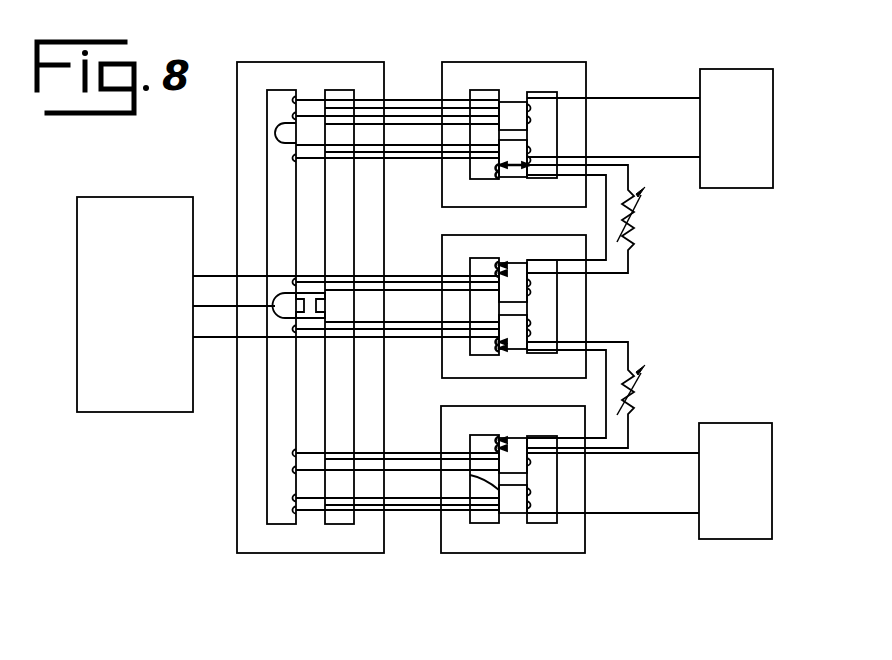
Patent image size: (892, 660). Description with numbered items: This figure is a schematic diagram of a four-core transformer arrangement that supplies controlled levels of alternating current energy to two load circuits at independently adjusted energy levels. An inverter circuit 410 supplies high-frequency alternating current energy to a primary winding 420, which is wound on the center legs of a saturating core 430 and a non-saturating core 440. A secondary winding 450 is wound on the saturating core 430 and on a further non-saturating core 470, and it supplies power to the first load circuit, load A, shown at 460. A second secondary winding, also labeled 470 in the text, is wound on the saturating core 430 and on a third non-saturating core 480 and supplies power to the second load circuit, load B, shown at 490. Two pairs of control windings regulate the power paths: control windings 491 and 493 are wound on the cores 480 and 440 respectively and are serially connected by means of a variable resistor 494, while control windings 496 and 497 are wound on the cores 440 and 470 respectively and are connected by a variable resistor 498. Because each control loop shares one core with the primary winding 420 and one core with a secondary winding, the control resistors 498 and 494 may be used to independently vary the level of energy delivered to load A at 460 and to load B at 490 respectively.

The inverter circuit 410 is at (140, 412).
The primary winding 420 is at (395, 276).
The saturating core 430 is at (300, 62).
The non-saturating core 440 is at (586, 305).
The secondary winding 450 is at (400, 95).
The first load circuit (load A) 460 is at (735, 68).
The non-saturating core 470 is at (530, 62).
The third non-saturating core 480 is at (537, 553).
The second load circuit (load B) 490 is at (728, 422).
The control winding 491 is at (510, 437).
The control winding 493 is at (512, 350).
The variable resistor 494 is at (637, 398).
The control winding 496 is at (506, 262).
The control winding 497 is at (510, 178).
The variable resistor 498 is at (632, 222).